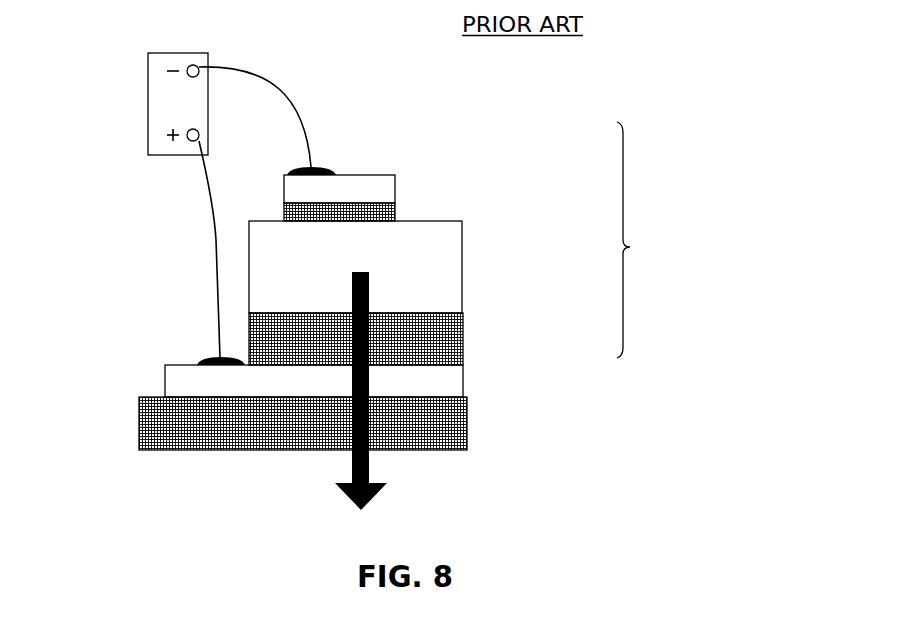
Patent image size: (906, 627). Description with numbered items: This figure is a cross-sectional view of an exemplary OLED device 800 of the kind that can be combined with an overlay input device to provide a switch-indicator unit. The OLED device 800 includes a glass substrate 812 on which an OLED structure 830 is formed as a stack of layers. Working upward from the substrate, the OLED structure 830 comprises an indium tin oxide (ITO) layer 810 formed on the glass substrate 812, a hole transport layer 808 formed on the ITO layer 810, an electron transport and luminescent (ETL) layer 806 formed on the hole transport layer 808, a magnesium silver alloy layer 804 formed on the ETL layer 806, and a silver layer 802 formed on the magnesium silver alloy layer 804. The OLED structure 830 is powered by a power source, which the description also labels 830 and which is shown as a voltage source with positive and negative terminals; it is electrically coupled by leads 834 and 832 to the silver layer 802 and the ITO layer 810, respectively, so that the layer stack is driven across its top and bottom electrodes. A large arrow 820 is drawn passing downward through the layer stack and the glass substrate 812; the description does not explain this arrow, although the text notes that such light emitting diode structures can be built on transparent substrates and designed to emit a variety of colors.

The OLED device 800 is at (702, 77).
The silver layer 802 is at (395, 184).
The magnesium silver alloy layer 804 is at (395, 213).
The electron transport and luminescent (ETL) layer 806 is at (462, 250).
The hole transport layer 808 is at (463, 335).
The indium tin oxide (ITO) layer 810 is at (463, 378).
The glass substrate 812 is at (138, 424).
The light emission direction arrow 820 is at (368, 460).
The OLED structure 830 is at (180, 53).
The lead 832 is at (272, 84).
The lead 834 is at (215, 254).